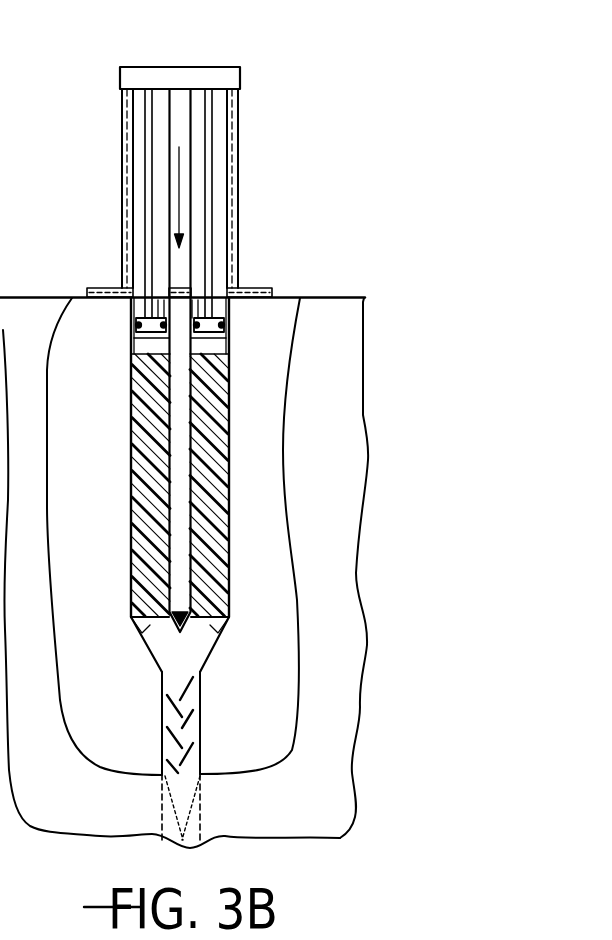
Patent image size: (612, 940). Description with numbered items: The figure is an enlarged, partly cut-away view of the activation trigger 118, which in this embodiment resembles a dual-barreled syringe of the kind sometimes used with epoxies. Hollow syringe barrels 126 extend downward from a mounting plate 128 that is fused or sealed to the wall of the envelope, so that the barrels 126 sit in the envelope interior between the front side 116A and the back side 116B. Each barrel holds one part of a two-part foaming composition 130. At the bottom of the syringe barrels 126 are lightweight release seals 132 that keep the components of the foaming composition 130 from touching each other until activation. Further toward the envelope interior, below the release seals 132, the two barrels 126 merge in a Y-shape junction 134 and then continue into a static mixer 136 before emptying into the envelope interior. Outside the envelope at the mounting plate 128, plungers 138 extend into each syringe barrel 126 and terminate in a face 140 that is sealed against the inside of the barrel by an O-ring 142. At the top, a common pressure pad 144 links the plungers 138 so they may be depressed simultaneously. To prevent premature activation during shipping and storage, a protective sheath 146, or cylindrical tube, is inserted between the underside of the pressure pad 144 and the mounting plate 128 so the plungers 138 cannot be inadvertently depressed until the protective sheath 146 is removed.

The front side 116A is at (312, 786).
The back side 116B is at (248, 727).
The activation trigger 118 is at (102, 211).
The syringe barrels 126 is at (183, 455).
The mounting plate 128 is at (243, 291).
The foaming composition 130 is at (152, 545).
The release seals 132 is at (145, 630).
The Y-shape junction 134 is at (187, 647).
The static mixer 136 is at (175, 722).
The plungers 138 is at (152, 186).
The face 140 is at (140, 352).
The O-ring 142 is at (134, 325).
The pressure pad 144 is at (156, 78).
The protective sheath 146 is at (238, 152).